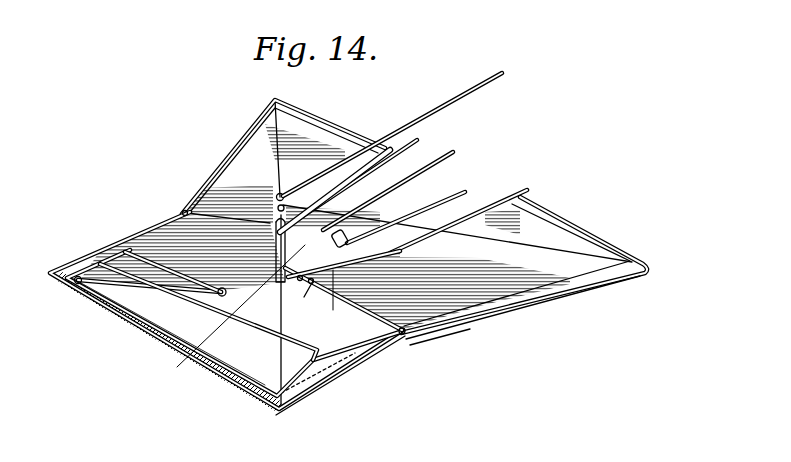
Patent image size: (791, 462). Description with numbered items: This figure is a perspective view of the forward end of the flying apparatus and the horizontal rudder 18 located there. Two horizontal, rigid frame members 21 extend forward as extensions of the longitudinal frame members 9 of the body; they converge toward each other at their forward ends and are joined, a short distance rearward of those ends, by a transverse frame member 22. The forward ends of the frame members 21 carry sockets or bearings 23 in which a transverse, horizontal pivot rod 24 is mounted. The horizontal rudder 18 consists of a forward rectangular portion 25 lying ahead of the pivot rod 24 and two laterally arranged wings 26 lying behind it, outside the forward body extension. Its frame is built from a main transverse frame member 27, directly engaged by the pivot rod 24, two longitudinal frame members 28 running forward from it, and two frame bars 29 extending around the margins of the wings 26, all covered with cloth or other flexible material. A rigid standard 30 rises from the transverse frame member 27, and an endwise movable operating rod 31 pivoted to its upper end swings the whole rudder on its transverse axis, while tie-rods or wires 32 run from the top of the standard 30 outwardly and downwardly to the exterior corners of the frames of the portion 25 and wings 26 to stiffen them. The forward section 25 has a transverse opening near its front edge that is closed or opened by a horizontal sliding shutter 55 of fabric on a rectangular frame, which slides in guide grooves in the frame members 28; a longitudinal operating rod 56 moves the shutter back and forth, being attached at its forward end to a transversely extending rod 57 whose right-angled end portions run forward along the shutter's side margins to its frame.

The longitudinal frame member 9 is at (418, 140).
The horizontal rudder 18 is at (467, 331).
The horizontal rigid frame member 21 is at (222, 288).
The transverse frame member 22 is at (348, 243).
The socket or bearing 23 is at (234, 315).
The pivot rod 24 is at (310, 278).
The forward rectangular portion 25 is at (350, 354).
The lateral wing 26 is at (330, 138).
The main transverse frame member 27 is at (183, 213).
The longitudinal frame member 28 is at (107, 250).
The frame bar 29 is at (244, 144).
The rigid arm or standard 30 is at (257, 227).
The operating rod 31 is at (470, 94).
The tie-rod or wire 32 is at (277, 157).
The sliding shutter 55 is at (168, 331).
The operating rod 56 is at (454, 152).
The transversely extending rod 57 is at (257, 312).